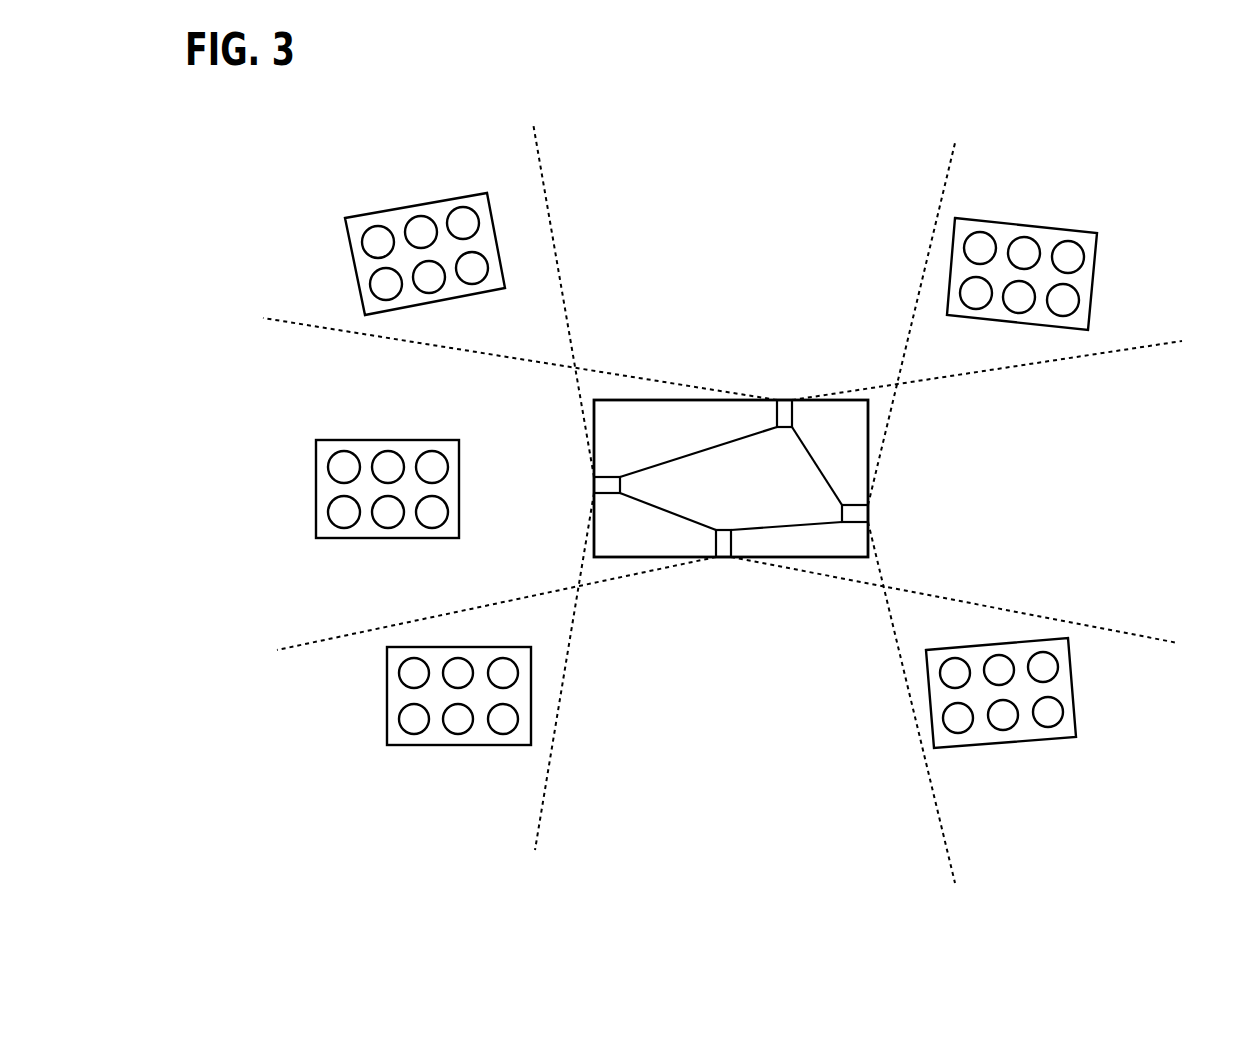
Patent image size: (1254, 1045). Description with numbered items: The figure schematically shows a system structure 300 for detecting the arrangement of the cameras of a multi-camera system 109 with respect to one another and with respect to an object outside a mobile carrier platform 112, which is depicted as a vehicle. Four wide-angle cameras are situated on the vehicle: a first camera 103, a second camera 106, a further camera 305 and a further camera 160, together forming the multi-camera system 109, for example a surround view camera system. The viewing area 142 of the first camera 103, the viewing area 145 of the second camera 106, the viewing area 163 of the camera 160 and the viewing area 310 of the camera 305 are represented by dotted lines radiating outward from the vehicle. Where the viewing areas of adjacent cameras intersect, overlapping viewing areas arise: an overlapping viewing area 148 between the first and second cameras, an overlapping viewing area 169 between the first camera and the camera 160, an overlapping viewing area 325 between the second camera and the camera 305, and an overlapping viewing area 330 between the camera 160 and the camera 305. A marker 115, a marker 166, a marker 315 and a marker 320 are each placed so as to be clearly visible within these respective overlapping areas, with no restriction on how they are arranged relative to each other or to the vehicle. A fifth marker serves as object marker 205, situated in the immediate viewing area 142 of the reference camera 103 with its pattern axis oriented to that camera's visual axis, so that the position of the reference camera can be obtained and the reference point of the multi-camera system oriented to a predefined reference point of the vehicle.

The system structure 300 is at (582, 120).
The mobile carrier platform 112 is at (855, 443).
The multi-camera system 109 is at (708, 448).
The first camera 103 is at (607, 485).
The second camera 106 is at (787, 400).
The camera 305 is at (865, 513).
The camera 160 is at (723, 550).
The marker 115 is at (397, 223).
The marker 315 is at (1003, 230).
The marker 320 is at (1062, 690).
The object marker 205 is at (327, 492).
The marker 166 is at (398, 697).
The overlapping viewing area 148 is at (318, 250).
The viewing area 145 is at (730, 310).
The overlapping viewing area 325 is at (1128, 285).
The viewing area 310 is at (1022, 480).
The viewing area 142 is at (338, 590).
The overlapping viewing area 169 is at (478, 793).
The viewing area 163 is at (760, 687).
The overlapping viewing area 330 is at (1123, 745).